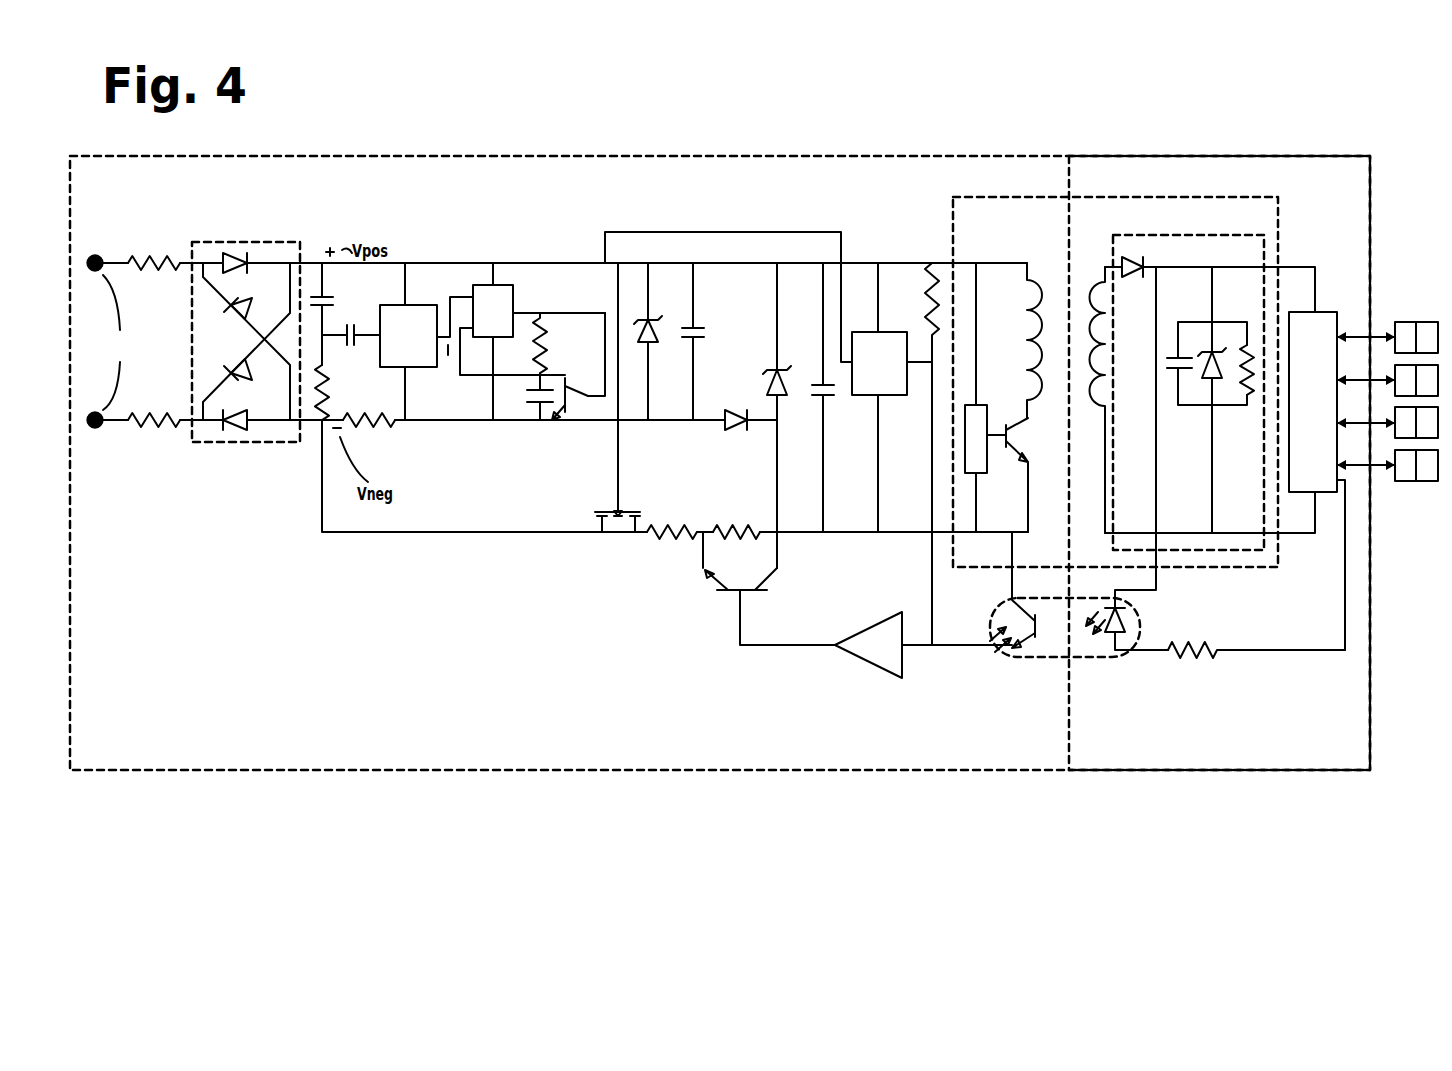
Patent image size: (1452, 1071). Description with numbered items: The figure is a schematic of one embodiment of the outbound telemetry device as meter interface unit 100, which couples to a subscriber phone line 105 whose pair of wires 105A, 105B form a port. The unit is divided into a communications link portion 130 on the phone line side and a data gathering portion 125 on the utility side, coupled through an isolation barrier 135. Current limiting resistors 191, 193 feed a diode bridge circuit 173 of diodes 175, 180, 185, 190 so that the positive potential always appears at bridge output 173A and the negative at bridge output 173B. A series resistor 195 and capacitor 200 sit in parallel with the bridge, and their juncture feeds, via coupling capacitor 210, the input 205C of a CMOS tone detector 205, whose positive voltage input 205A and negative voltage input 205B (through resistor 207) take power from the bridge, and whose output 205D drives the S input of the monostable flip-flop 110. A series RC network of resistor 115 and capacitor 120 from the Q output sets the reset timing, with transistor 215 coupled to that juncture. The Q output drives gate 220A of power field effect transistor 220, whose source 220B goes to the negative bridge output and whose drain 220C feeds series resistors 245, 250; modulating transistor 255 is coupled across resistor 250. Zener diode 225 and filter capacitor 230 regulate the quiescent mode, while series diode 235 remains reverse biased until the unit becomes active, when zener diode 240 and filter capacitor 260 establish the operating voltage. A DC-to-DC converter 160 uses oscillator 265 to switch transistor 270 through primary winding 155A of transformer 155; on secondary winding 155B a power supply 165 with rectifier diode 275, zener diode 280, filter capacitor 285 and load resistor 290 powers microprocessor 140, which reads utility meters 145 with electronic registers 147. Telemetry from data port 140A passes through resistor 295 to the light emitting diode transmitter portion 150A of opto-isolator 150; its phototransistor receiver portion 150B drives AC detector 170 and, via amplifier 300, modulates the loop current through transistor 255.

The meter interface unit 100 is at (390, 133).
The subscriber phone line 105 is at (109, 342).
The phone line wire 105A is at (102, 254).
The phone line wire 105B is at (102, 430).
The monostable flip-flop 110 is at (513, 302).
The resistor 115 is at (547, 335).
The capacitor 120 is at (540, 420).
The data gathering portion 125 is at (1237, 157).
The communications link portion 130 is at (575, 156).
The isolation barrier 135 is at (1070, 225).
The microprocessor 140 is at (1313, 402).
The data port 140A is at (1343, 500).
The utility meters 145 is at (1388, 376).
The electronic register 147 is at (1405, 320).
The opto-isolator 150 is at (1098, 660).
The light emitting diode transmitter portion 150A is at (1134, 606).
The phototransistor receiver portion 150B is at (995, 642).
The transformer 155 is at (1067, 398).
The primary winding 155A is at (1032, 322).
The secondary winding 155B is at (1112, 330).
The DC-to-DC converter 160 is at (950, 215).
The power supply 165 is at (1213, 236).
The AC detector 170 is at (900, 330).
The diode bridge circuit 173 is at (205, 243).
The bridge output 173A is at (316, 262).
The bridge output 173B is at (318, 424).
The diode 175 is at (245, 253).
The diode 180 is at (223, 300).
The diode 185 is at (223, 352).
The diode 190 is at (235, 433).
The current limiting resistor 191 is at (155, 255).
The current limiting resistor 193 is at (160, 435).
The resistor 195 is at (328, 376).
The capacitor 200 is at (326, 300).
The CMOS tone detector 205 is at (412, 305).
The positive voltage input 205A is at (432, 300).
The negative voltage input 205B is at (407, 370).
The input 205C is at (403, 290).
The output 205D is at (445, 340).
The resistor 207 is at (382, 432).
The coupling capacitor 210 is at (362, 330).
The transistor 215 is at (578, 416).
The power field effect transistor 220 is at (622, 526).
The gate 220A is at (606, 510).
The source 220B is at (601, 530).
The drain 220C is at (634, 530).
The zener diode 225 is at (644, 318).
The filter capacitor 230 is at (694, 326).
The series diode 235 is at (740, 432).
The zener diode 240 is at (770, 368).
The resistor 245 is at (686, 524).
The resistor 250 is at (742, 524).
The modulating transistor 255 is at (768, 580).
The filter capacitor 260 is at (832, 398).
The oscillator 265 is at (988, 418).
The transistor 270 is at (1012, 430).
The rectifier diode 275 is at (1145, 262).
The zener diode 280 is at (1204, 360).
The filter capacitor 285 is at (1176, 355).
The load resistor 290 is at (1238, 385).
The resistor 295 is at (1206, 662).
The amplifier 300 is at (858, 655).